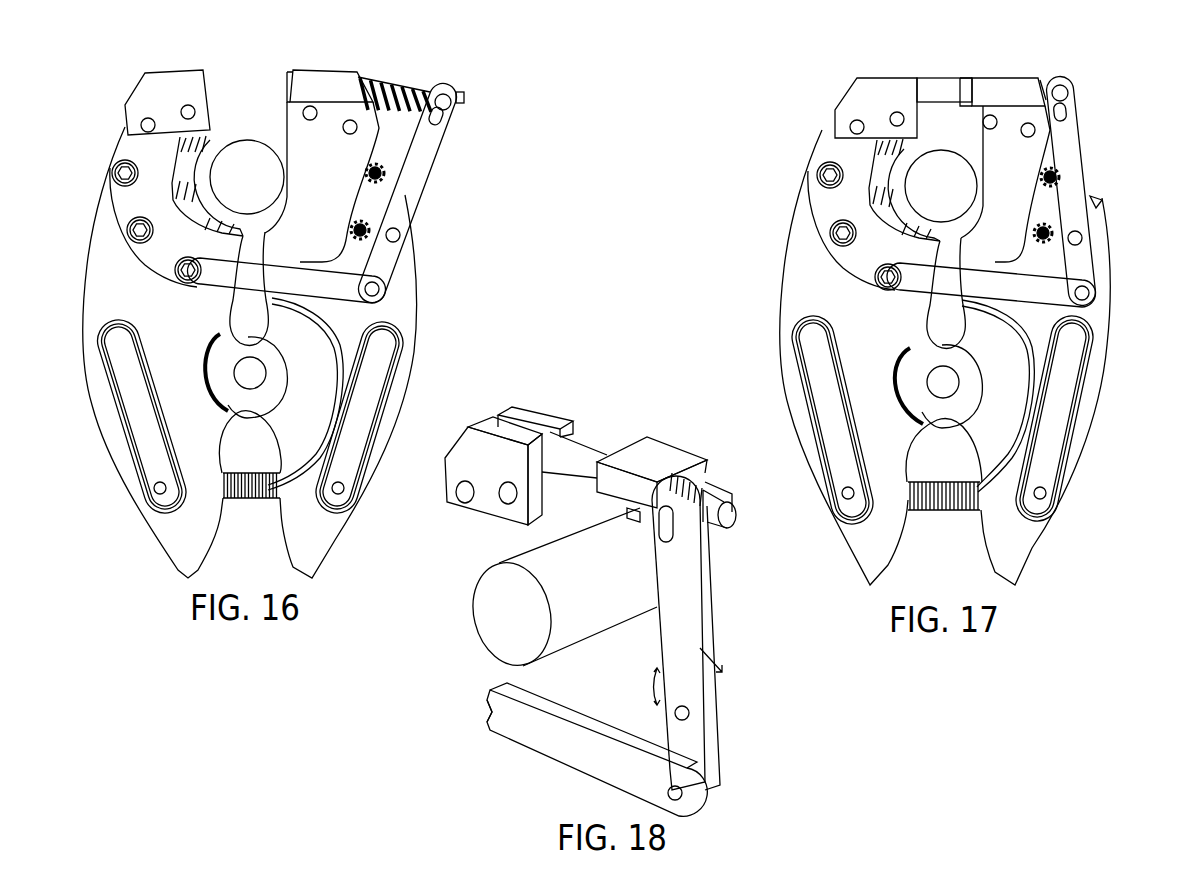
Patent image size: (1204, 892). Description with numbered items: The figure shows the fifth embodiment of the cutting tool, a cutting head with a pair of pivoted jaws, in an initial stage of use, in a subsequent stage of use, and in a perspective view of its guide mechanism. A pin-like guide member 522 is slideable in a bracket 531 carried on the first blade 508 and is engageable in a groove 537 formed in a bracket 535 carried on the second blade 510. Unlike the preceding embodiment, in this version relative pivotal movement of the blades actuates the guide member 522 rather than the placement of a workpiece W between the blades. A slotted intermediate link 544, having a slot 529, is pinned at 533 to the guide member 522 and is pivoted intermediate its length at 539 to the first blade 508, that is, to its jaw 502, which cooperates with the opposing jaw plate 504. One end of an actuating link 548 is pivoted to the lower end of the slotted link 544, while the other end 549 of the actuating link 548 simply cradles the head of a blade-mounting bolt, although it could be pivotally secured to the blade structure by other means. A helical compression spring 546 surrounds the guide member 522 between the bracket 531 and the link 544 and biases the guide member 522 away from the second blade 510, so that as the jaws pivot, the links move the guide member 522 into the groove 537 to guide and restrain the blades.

In FIG. 16, the jaw 502 is at (404, 322).
In FIG. 17, the jaw 502 is at (1104, 324).
In FIG. 16, the first jaw plate 504 is at (93, 312).
In FIG. 17, the first jaw plate 504 is at (790, 312).
In FIG. 16, the first blade 508 is at (310, 159).
In FIG. 17, the first blade 508 is at (994, 160).
In FIG. 16, the second blade 510 is at (122, 137).
In FIG. 17, the second blade 510 is at (825, 140).
In FIG. 16, the guide member 522 is at (455, 94).
In FIG. 17, the guide member 522 is at (931, 79).
In FIG. 18, the guide member 522 is at (738, 513).
In FIG. 16, the slot 529 is at (444, 117).
In FIG. 17, the slot 529 is at (1066, 113).
In FIG. 18, the slot 529 is at (660, 540).
In FIG. 16, the bracket 531 is at (329, 72).
In FIG. 17, the bracket 531 is at (1000, 77).
In FIG. 18, the bracket 531 is at (665, 450).
In FIG. 16, the pin 533 is at (452, 103).
In FIG. 17, the pin 533 is at (1069, 96).
In FIG. 18, the pin 533 is at (733, 496).
In FIG. 16, the bracket 535 is at (155, 92).
In FIG. 17, the bracket 535 is at (858, 95).
In FIG. 18, the bracket 535 is at (470, 446).
In FIG. 18, the groove 537 is at (534, 412).
In FIG. 16, the pivot 539 is at (401, 237).
In FIG. 17, the pivot 539 is at (1083, 239).
In FIG. 18, the pivot 539 is at (682, 713).
In FIG. 16, the intermediate link 544 is at (416, 189).
In FIG. 17, the intermediate link 544 is at (1084, 180).
In FIG. 18, the intermediate link 544 is at (702, 604).
In FIG. 16, the helical compression spring 546 is at (382, 76).
In FIG. 17, the helical compression spring 546 is at (1042, 79).
In FIG. 18, the helical compression spring 546 is at (702, 480).
In FIG. 16, the actuating link 548 is at (398, 350).
In FIG. 17, the actuating link 548 is at (1100, 350).
In FIG. 18, the actuating link 548 is at (597, 766).
In FIG. 16, the end of link 549 is at (196, 290).
In FIG. 17, the end of link 549 is at (897, 292).
In FIG. 18, the end of link 549 is at (488, 704).
In FIG. 16, the workpiece W is at (244, 138).
In FIG. 17, the workpiece W is at (942, 149).
In FIG. 18, the workpiece W is at (480, 607).